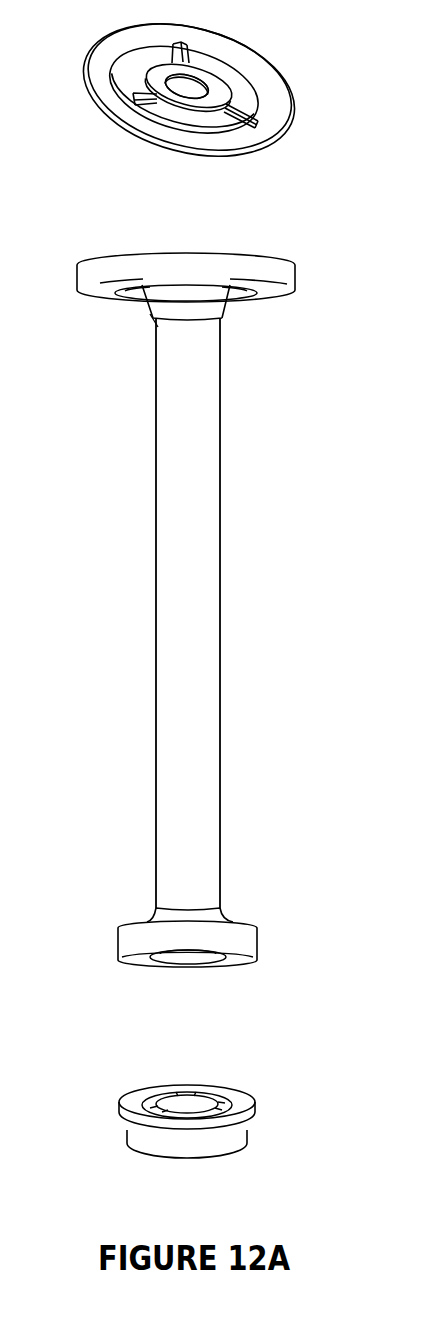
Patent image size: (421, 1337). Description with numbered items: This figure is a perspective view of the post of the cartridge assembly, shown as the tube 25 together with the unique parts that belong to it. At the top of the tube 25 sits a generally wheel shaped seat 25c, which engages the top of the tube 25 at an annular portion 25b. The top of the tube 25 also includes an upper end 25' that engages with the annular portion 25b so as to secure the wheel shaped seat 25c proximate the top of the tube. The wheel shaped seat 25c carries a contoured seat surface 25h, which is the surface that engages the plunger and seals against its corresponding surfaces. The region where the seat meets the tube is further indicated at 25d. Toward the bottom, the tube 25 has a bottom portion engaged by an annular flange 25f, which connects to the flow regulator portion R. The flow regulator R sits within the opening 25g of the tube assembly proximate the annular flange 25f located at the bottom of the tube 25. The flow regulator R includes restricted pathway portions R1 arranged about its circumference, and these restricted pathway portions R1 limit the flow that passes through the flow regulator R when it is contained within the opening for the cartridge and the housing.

The tube 25 is at (249, 613).
The upper end 25' is at (121, 359).
The annular portion 25b is at (213, 305).
The wheel shaped seat 25c is at (368, 275).
The boss on underside of flange 25d is at (133, 293).
The flange 25f is at (167, 920).
The opening 25g is at (178, 968).
The contoured seat surface 25h is at (203, 80).
The flow regulator R is at (255, 1112).
The restricted pathway portions R1 is at (213, 1092).